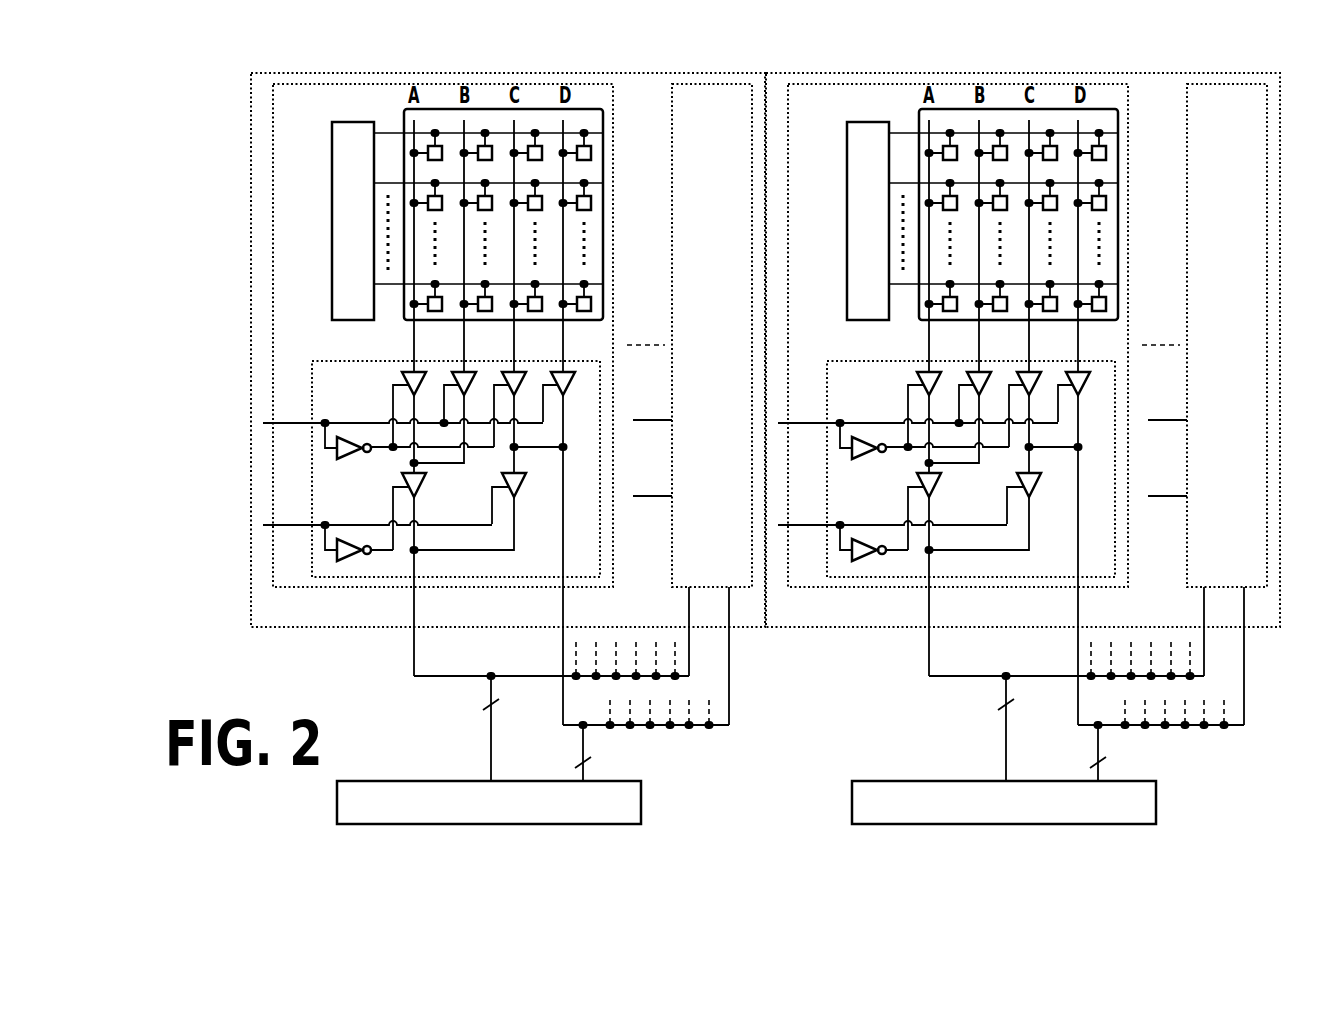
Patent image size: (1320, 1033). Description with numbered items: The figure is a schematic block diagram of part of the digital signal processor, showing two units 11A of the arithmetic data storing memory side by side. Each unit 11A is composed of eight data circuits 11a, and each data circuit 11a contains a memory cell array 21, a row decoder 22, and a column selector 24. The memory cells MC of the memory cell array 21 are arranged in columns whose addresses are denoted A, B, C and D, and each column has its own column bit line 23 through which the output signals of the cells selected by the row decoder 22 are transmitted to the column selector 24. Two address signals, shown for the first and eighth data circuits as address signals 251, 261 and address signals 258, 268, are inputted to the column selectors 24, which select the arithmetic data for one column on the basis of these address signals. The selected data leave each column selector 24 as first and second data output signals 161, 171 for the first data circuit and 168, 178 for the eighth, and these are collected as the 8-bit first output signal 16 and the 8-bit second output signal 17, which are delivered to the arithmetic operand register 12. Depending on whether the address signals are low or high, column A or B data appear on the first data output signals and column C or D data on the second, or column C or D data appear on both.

The unit of the arithmetic data storing memory 11A is at (487, 70).
The data circuit 11a is at (317, 95).
The memory cell array 21 is at (537, 108).
The row decoder 22 is at (364, 230).
The column bit line 23 is at (588, 342).
The column selector 24 is at (462, 578).
The memory cell MC is at (432, 200).
The address signal 251 is at (286, 421).
The address signal 258 is at (643, 418).
The address signal 261 is at (286, 523).
The address signal 268 is at (643, 494).
The first data output signal 161 is at (414, 667).
The first data output signal 168 is at (689, 640).
The second data output signal 171 is at (563, 656).
The second data output signal 178 is at (729, 640).
The first output signal 16 is at (491, 724).
The second output signal 17 is at (583, 750).
The bus width (8 bits) 8 is at (799, 729).
The arithmetic operand register 12 is at (645, 801).